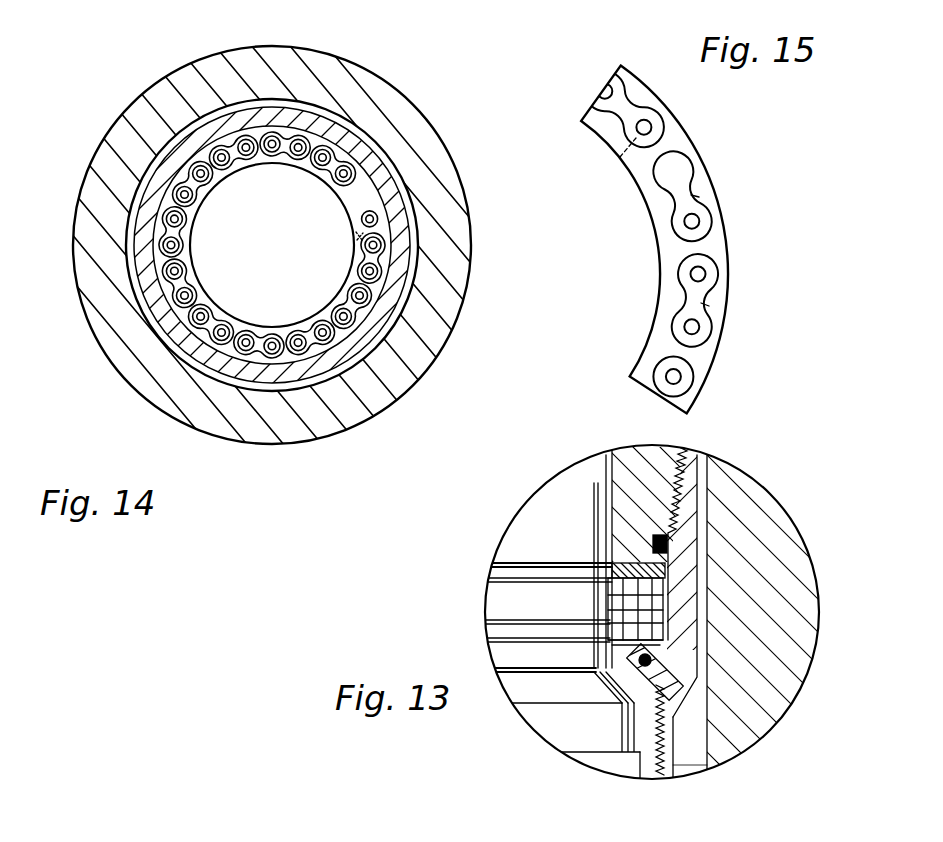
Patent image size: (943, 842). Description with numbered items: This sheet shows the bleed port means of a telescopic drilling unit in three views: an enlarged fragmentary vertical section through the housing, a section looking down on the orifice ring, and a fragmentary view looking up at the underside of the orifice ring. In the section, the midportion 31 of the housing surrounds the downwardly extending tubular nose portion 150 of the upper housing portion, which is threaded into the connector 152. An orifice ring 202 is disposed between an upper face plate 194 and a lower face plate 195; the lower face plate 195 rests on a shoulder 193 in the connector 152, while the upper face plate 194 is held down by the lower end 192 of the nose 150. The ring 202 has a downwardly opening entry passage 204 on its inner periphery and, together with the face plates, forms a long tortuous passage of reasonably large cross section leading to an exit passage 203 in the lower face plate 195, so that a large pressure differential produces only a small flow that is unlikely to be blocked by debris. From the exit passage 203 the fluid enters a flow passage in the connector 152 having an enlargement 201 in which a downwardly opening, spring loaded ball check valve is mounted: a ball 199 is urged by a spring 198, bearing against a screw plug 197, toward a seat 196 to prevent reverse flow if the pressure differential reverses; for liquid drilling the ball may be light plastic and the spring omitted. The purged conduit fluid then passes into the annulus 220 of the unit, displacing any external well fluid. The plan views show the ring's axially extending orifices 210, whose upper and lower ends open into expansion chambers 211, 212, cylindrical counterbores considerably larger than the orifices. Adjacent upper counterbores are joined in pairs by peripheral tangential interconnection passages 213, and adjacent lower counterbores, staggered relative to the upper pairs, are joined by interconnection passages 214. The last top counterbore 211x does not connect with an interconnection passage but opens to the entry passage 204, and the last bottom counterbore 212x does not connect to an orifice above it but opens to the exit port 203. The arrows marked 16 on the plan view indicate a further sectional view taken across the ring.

In FIG. 14, the midportion of the housing 31 is at (443, 300).
In FIG. 13, the midportion of the housing 31 is at (753, 502).
In FIG. 13, the tubular nose portion 150 is at (645, 456).
In FIG. 14, the connector 152 is at (380, 172).
In FIG. 13, the connector 152 is at (653, 763).
In FIG. 13, the lower end of nose 192 is at (637, 559).
In FIG. 13, the shoulder 193 is at (612, 645).
In FIG. 13, the upper face plate 194 is at (497, 566).
In FIG. 13, the lower face plate 195 is at (500, 630).
In FIG. 13, the seat 196 is at (655, 658).
In FIG. 13, the screw plug 197 is at (680, 686).
In FIG. 13, the spring 198 is at (614, 706).
In FIG. 13, the ball 199 is at (600, 680).
In FIG. 13, the enlargement of passage 201 is at (602, 693).
In FIG. 14, the orifice ring 202 is at (358, 195).
In FIG. 15, the orifice ring 202 is at (677, 252).
In FIG. 13, the orifice ring 202 is at (500, 592).
In FIG. 13, the exit passage 203 is at (667, 632).
In FIG. 14, the entry passage 204 is at (357, 238).
In FIG. 13, the entry passage 204 is at (608, 603).
In FIG. 14, the orifices 210 is at (341, 321).
In FIG. 15, the orifices 210 is at (652, 125).
In FIG. 13, the orifices 210 is at (665, 603).
In FIG. 14, the upper expansion chambers 211 is at (385, 260).
In FIG. 14, the last counterbore in the top of the orifice ring 211x is at (380, 218).
In FIG. 15, the lower expansion chambers 212 is at (716, 262).
In FIG. 15, the last counterbore in the bottom of the orifice ring 212x is at (676, 168).
In FIG. 14, the peripheral tangential interconnection passages 213 is at (312, 344).
In FIG. 15, the peripheral tangential interconnection passages 214 is at (699, 196).
In FIG. 13, the annulus 220 is at (693, 763).
In FIG. 14, the section line 16 is at (213, 163).